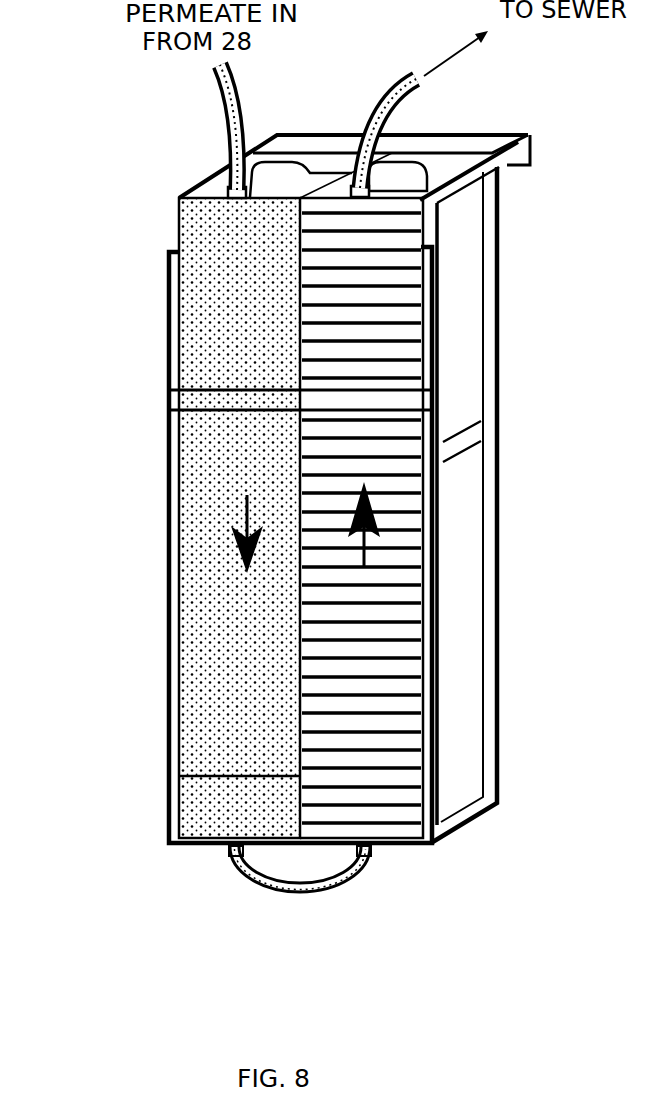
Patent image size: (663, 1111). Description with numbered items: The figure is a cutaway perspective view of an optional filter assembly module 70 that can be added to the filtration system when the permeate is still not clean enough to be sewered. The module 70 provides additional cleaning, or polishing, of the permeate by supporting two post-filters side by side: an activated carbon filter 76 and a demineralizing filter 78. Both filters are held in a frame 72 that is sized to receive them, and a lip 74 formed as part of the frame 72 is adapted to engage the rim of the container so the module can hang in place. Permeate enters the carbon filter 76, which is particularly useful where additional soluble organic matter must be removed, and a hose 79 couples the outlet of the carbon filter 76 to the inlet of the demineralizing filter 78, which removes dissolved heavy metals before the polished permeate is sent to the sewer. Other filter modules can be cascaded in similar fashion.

The filter assembly module 70 is at (100, 433).
The frame 72 is at (485, 325).
The lip 74 is at (532, 137).
The activated carbon filter 76 is at (201, 623).
The demineralizing filter 78 is at (403, 637).
The hose 79 is at (296, 893).